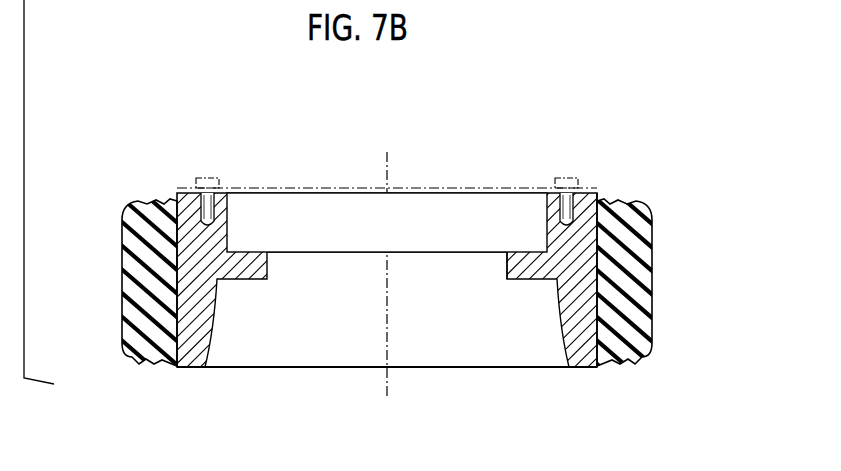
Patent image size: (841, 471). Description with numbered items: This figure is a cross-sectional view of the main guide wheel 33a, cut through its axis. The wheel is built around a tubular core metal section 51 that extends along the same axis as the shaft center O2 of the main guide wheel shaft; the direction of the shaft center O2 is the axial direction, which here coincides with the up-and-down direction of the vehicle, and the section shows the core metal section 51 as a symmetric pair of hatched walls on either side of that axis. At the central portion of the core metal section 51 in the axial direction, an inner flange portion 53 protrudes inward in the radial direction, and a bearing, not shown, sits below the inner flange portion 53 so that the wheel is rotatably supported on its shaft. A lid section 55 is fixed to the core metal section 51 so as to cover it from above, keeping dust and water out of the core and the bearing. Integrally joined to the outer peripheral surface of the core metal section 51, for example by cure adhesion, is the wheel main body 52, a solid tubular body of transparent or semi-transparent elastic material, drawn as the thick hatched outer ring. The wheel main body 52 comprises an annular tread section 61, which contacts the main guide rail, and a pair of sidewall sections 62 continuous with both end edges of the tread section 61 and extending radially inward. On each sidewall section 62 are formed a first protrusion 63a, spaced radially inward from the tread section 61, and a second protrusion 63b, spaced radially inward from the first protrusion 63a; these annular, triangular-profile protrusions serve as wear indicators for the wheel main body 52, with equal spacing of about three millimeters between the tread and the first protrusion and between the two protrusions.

The main guide wheel 33a is at (643, 112).
The core metal section 51 is at (578, 308).
The wheel main body 52 is at (410, 289).
The inner flange portion 53 is at (523, 265).
The lid section 55 is at (473, 188).
The tread section 61 is at (655, 255).
The sidewall section 62 is at (608, 199).
The first protrusion 63a is at (638, 207).
The second protrusion 63b is at (620, 203).
The shaft center O2 is at (388, 163).